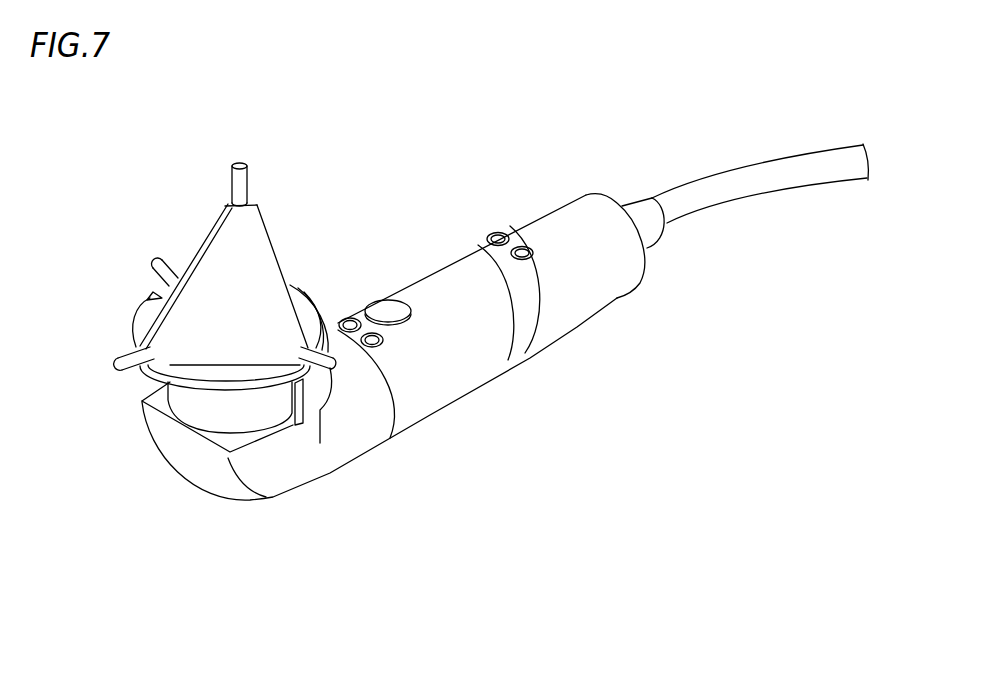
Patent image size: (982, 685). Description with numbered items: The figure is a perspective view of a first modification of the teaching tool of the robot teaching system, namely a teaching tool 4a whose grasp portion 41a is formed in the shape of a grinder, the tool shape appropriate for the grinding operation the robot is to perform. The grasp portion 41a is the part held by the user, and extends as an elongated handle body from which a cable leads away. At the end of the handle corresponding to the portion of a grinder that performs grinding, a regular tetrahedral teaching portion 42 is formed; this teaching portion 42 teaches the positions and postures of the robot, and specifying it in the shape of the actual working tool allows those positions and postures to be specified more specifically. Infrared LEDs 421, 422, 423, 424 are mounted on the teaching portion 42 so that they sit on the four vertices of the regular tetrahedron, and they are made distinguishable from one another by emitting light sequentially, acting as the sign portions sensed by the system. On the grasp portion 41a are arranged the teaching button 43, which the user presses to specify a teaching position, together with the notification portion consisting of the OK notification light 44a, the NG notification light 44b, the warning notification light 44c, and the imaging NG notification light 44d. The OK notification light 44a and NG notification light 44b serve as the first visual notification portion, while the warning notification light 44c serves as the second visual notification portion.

The teaching tool 4a is at (552, 227).
The grasp portion 41a is at (425, 285).
The teaching portion 42 is at (196, 250).
The infrared LED 421 is at (233, 163).
The infrared LED 422 is at (156, 262).
The infrared LED 423 is at (116, 360).
The infrared LED 424 is at (326, 318).
The teaching button 43 is at (393, 308).
The OK notification light 44a is at (385, 338).
The NG notification light 44b is at (374, 347).
The warning notification light 44c is at (521, 247).
The imaging NG notification light 44d is at (494, 234).